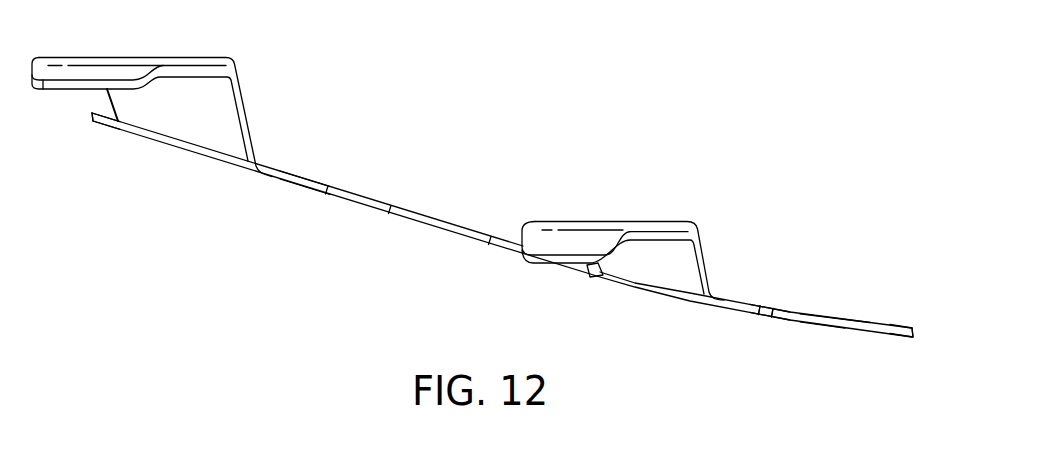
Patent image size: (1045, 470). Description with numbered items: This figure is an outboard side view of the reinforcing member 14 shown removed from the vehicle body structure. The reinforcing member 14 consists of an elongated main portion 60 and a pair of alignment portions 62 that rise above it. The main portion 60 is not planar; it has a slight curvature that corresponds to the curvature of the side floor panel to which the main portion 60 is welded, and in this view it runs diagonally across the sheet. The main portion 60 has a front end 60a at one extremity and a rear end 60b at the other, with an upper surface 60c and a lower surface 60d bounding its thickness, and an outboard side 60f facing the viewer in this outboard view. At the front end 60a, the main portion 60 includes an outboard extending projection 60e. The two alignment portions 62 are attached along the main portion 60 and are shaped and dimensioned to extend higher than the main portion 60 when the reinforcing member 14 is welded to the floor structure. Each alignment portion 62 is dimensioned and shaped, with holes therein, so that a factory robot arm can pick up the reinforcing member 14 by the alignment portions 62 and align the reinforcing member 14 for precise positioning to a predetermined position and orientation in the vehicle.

The reinforcing member 14 is at (654, 93).
The main portion 60 is at (438, 218).
The front end 60a is at (914, 335).
The rear end 60b is at (87, 115).
The upper surface 60c is at (836, 318).
The lower surface 60d is at (819, 325).
The outboard extending projection 60e is at (788, 318).
The outboard side 60f is at (296, 179).
The alignment portion 62 is at (189, 57).